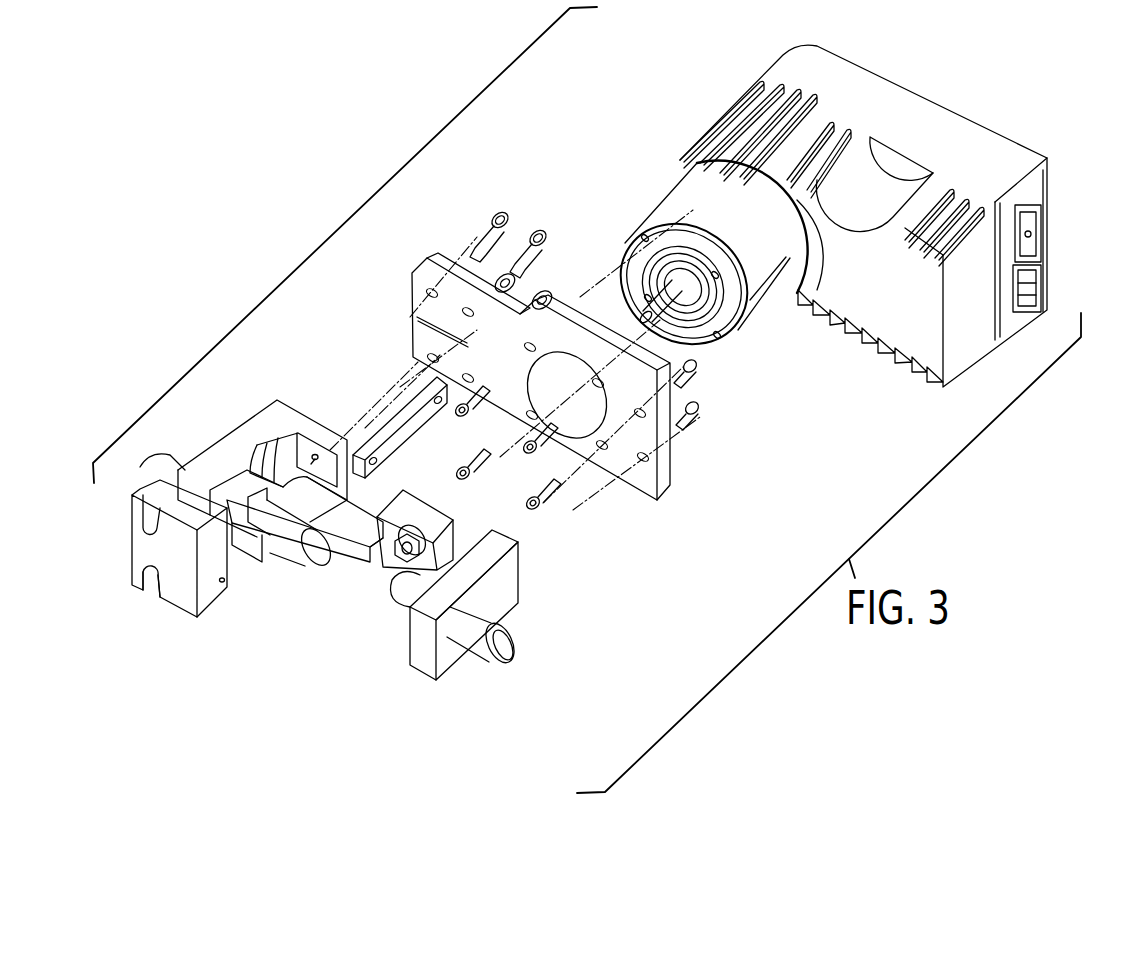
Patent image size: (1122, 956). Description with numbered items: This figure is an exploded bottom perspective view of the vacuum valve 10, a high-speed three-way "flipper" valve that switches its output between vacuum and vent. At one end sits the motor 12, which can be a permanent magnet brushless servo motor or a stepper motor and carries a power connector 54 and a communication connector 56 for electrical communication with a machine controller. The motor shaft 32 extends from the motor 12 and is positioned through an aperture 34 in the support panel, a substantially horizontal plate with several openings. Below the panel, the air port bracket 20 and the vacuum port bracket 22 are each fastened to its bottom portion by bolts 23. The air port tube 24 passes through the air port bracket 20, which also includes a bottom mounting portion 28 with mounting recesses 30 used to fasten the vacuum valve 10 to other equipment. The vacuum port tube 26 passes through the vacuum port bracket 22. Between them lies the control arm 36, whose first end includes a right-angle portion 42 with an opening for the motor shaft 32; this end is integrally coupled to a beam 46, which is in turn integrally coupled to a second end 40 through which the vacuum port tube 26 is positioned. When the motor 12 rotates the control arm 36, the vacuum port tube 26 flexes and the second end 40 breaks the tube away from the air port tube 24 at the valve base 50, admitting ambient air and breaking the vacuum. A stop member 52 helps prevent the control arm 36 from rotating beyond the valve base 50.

The vacuum valve 10 is at (330, 237).
The motor 12 is at (937, 118).
The air port bracket 20 is at (245, 418).
The vacuum port bracket 22 is at (423, 660).
The bolts 23 is at (540, 230).
The air port tube 24 is at (142, 467).
The vacuum port tube 26 is at (292, 548).
The bottom mounting portion 28 is at (143, 545).
The mounting recesses 30 is at (150, 577).
The motor shaft 32 is at (643, 313).
The aperture 34 is at (577, 432).
The control arm 36 is at (380, 552).
The second end 40 is at (245, 545).
The right-angle portion 42 is at (417, 507).
The beam 46 is at (348, 530).
The valve base 50 is at (230, 478).
The stop member 52 is at (394, 420).
The power connector 54 is at (1050, 292).
The communication connector 56 is at (1050, 238).